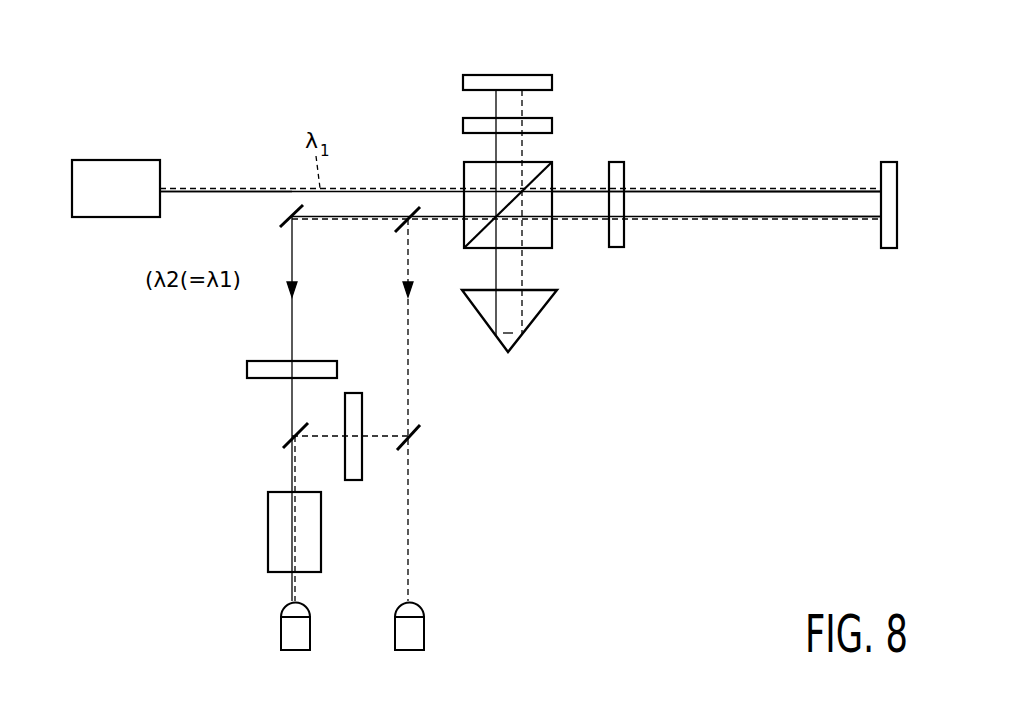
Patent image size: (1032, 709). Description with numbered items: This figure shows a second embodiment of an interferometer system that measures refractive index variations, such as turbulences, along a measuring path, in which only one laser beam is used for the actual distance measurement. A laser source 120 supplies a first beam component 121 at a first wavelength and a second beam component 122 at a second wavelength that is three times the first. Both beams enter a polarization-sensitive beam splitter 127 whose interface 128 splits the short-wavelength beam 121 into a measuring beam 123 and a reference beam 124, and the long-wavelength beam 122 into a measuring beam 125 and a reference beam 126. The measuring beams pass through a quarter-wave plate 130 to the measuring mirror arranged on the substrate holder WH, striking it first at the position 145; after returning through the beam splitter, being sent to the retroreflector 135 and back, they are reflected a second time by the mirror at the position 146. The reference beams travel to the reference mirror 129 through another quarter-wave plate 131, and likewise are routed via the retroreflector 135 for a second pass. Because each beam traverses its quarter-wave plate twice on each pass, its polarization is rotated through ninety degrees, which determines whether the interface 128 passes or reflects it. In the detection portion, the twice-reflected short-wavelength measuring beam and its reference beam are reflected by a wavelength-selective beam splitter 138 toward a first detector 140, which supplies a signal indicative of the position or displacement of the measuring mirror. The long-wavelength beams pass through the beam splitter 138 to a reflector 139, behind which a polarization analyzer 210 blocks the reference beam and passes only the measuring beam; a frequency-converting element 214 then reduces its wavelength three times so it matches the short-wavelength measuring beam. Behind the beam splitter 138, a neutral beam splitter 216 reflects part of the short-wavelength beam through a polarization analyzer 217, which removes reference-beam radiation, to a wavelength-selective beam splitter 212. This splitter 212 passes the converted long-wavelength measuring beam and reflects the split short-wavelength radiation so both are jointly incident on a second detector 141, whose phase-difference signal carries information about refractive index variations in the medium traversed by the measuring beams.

The laser source 120 is at (110, 160).
The first beam component 121 is at (276, 190).
The second beam component 122 is at (205, 193).
The measuring beam 123 is at (586, 175).
The reference beam 124 is at (522, 145).
The measuring beam 125 is at (716, 162).
The reference beam 126 is at (530, 100).
The polarization-sensitive beam splitter 127 is at (470, 172).
The interface 128 is at (472, 245).
The reference mirror 129 is at (497, 75).
The λ/4 plate 130 is at (616, 248).
The λ/4 plate 131 is at (463, 124).
The retroreflector 135 is at (519, 341).
The wavelength-selective beam splitter 138 is at (398, 225).
The reflector 139 is at (285, 211).
The first detector 140 is at (424, 630).
The second detector 141 is at (281, 633).
The position on measuring mirror 145 is at (878, 190).
The position on measuring mirror 146 is at (878, 218).
The polarization analyzer 210 is at (247, 367).
The wavelength-selective beam splitter 212 is at (285, 441).
The frequency-converting element 214 is at (268, 535).
The neutral beam splitter 216 is at (422, 436).
The polarization analyzer 217 is at (352, 481).
The substrate holder WH is at (890, 162).